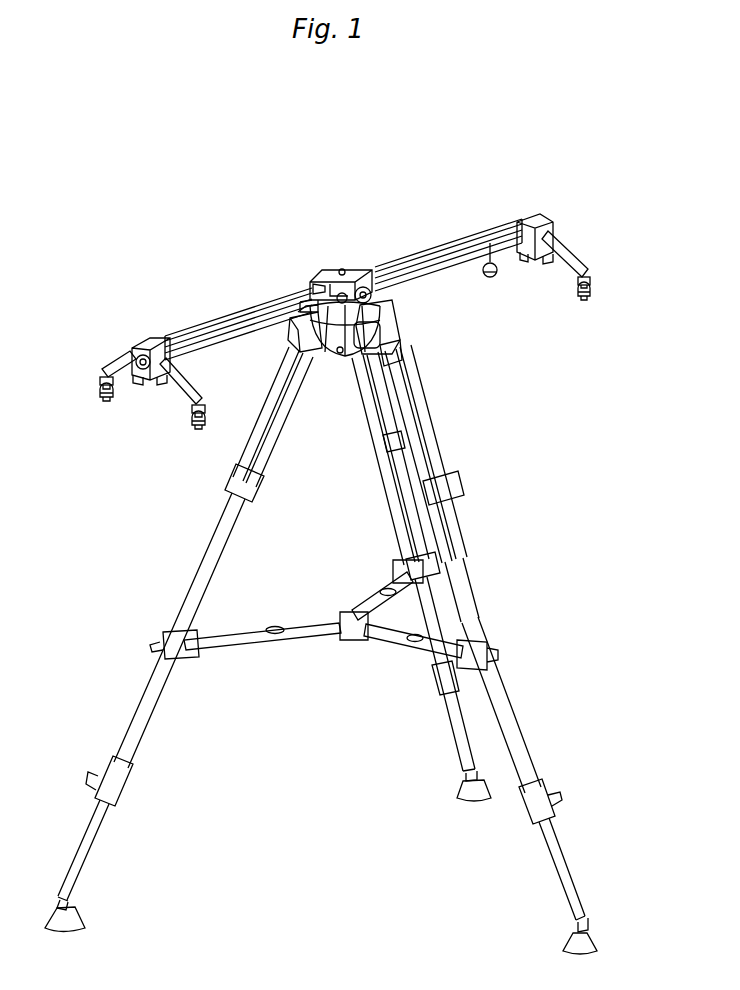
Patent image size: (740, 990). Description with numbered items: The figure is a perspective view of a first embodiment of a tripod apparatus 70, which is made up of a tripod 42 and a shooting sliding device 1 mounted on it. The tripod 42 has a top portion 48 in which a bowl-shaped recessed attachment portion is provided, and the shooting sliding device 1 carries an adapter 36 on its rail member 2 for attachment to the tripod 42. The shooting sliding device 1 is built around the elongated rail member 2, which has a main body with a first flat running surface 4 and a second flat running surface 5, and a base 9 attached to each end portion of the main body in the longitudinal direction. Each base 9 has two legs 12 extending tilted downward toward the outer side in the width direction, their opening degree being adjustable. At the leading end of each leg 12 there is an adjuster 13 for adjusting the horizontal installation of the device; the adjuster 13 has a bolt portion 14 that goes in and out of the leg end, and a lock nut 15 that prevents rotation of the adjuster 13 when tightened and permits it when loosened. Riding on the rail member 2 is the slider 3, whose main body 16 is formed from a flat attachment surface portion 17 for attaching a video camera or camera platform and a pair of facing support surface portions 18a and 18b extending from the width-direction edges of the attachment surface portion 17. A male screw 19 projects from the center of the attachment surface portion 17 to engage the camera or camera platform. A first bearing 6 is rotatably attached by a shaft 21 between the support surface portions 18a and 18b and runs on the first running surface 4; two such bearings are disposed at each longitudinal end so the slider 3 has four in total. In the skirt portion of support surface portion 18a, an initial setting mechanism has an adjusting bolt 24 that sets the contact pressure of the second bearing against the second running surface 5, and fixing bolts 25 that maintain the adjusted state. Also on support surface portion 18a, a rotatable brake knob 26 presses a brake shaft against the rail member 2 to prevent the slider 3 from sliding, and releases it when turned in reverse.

The tripod apparatus 70 is at (449, 152).
The shooting sliding device 1 is at (500, 213).
The rail member 2 is at (444, 234).
The slider 3 is at (357, 255).
The first running surface 4 is at (268, 306).
The second running surface 5 is at (233, 336).
The first bearing 6 is at (324, 287).
The base 9 is at (141, 345).
The leg 12 is at (568, 252).
The adjuster 13 is at (584, 301).
The bolt portion 14 is at (592, 291).
The lock nut 15 is at (592, 281).
The main body 16 is at (368, 258).
The attachment surface portion 17 is at (374, 281).
The support surface portion 18a is at (380, 291).
The support surface portion 18b is at (340, 264).
The male screw 19 is at (345, 266).
The shaft 21 is at (298, 318).
The adjusting bolt 24 is at (353, 358).
The fixing bolt 25 is at (377, 296).
The brake knob 26 is at (398, 368).
The adapter 36 is at (329, 326).
The tripod 42 is at (474, 578).
The top portion 48 is at (383, 313).